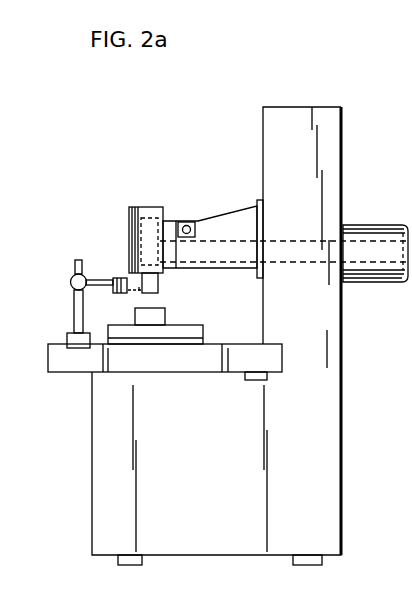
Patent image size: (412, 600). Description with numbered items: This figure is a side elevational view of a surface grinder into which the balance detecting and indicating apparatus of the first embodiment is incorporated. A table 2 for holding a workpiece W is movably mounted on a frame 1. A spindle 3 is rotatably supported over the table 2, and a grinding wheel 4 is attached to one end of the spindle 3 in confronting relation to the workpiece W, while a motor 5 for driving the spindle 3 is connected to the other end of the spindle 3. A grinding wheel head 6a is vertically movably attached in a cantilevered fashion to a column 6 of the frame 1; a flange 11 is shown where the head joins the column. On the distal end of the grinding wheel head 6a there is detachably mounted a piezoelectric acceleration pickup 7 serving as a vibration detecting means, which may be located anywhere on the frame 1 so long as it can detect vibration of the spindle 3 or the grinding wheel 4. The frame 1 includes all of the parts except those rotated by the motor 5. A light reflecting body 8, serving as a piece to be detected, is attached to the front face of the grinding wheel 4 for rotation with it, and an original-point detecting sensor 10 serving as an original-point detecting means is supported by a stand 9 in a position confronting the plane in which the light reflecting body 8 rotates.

The frame 1 is at (341, 468).
The table 2 is at (202, 330).
The spindle 3 is at (293, 241).
The grinding wheel 4 is at (129, 225).
The motor 5 is at (363, 236).
The column 6 is at (341, 136).
The grinding wheel head 6a is at (213, 218).
The piezoelectric acceleration pickup 7 is at (187, 222).
The light reflecting body 8 is at (136, 297).
The stand 9 is at (74, 308).
The original-point detecting sensor 10 is at (112, 280).
The flange 11 is at (250, 212).
The workpiece W is at (160, 315).